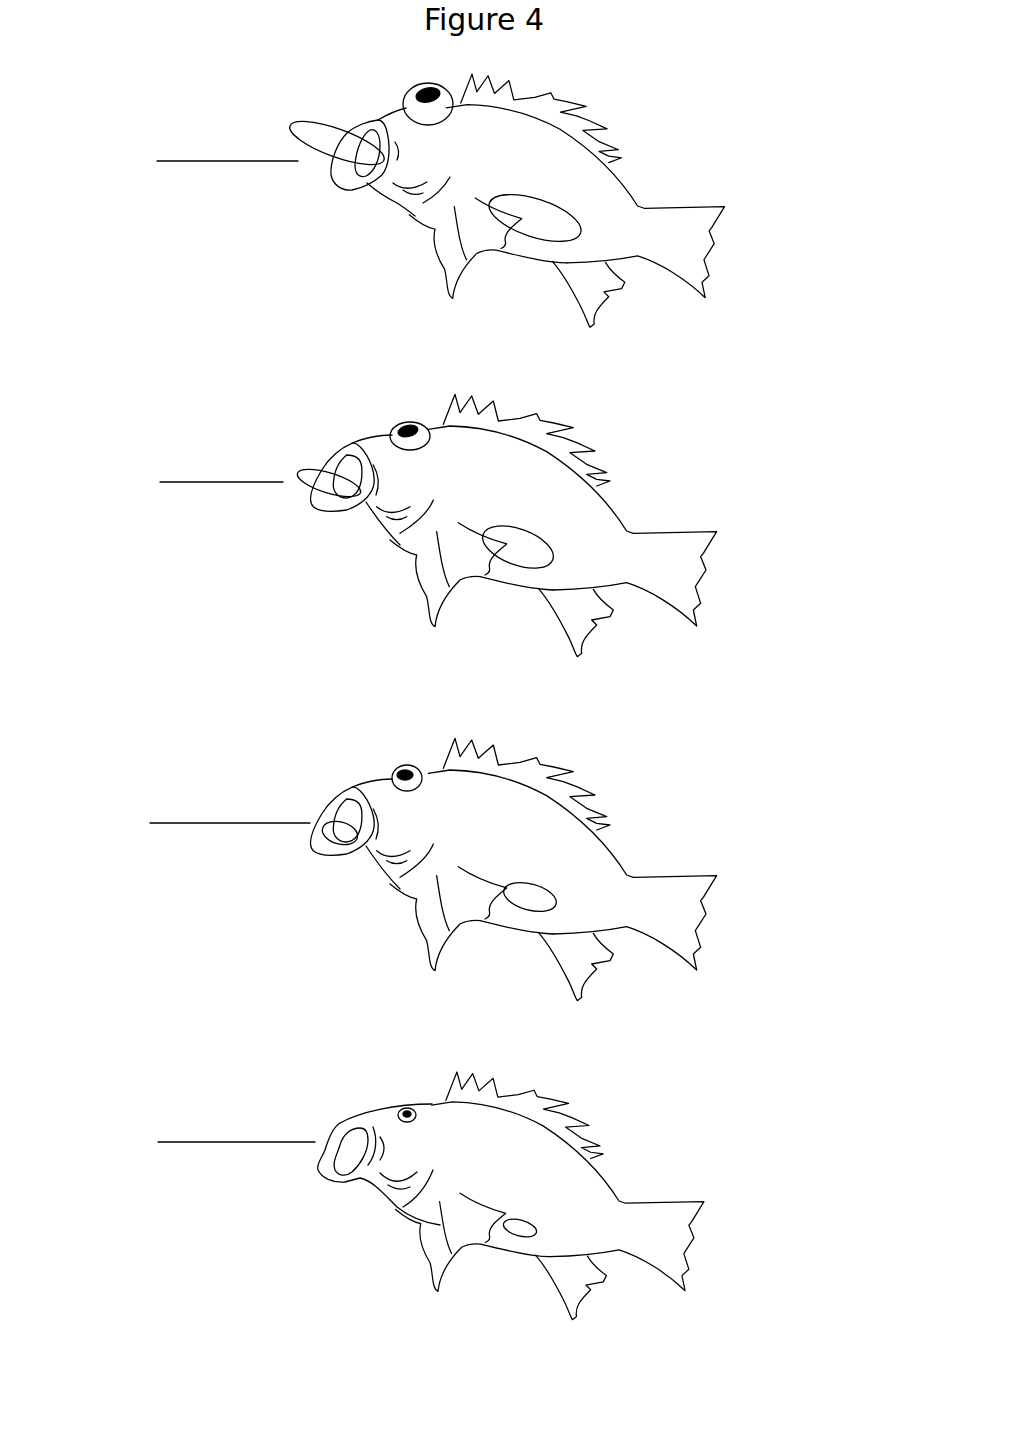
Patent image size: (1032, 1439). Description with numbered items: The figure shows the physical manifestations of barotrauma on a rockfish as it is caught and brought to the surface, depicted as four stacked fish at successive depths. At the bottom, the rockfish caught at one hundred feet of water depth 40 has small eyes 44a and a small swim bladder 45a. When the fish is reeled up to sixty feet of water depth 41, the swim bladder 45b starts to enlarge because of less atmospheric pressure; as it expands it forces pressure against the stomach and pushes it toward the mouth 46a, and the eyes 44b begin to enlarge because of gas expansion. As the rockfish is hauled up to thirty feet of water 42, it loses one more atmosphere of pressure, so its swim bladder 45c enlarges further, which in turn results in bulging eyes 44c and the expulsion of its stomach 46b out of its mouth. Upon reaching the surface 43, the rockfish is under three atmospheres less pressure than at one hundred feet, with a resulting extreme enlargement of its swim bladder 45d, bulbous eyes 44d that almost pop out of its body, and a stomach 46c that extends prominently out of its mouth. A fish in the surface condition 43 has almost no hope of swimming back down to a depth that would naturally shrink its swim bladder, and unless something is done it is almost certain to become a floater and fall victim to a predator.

The 100 feet water depth condition 40 is at (456, 1194).
The 60 feet water depth condition 41 is at (464, 873).
The 30 feet water depth condition 42 is at (475, 530).
The surface condition 43 is at (474, 205).
The small eyes 44a is at (403, 1108).
The eyes 44b is at (392, 775).
The bulging eyes 44c is at (393, 430).
The bulbous eyes 44d is at (414, 97).
The small swim bladder 45a is at (520, 1230).
The swim bladder 45b is at (523, 895).
The swim bladder 45c is at (513, 552).
The swim bladder 45d is at (548, 235).
The mouth 46a is at (343, 836).
The stomach 46b is at (325, 481).
The stomach 46c is at (333, 160).